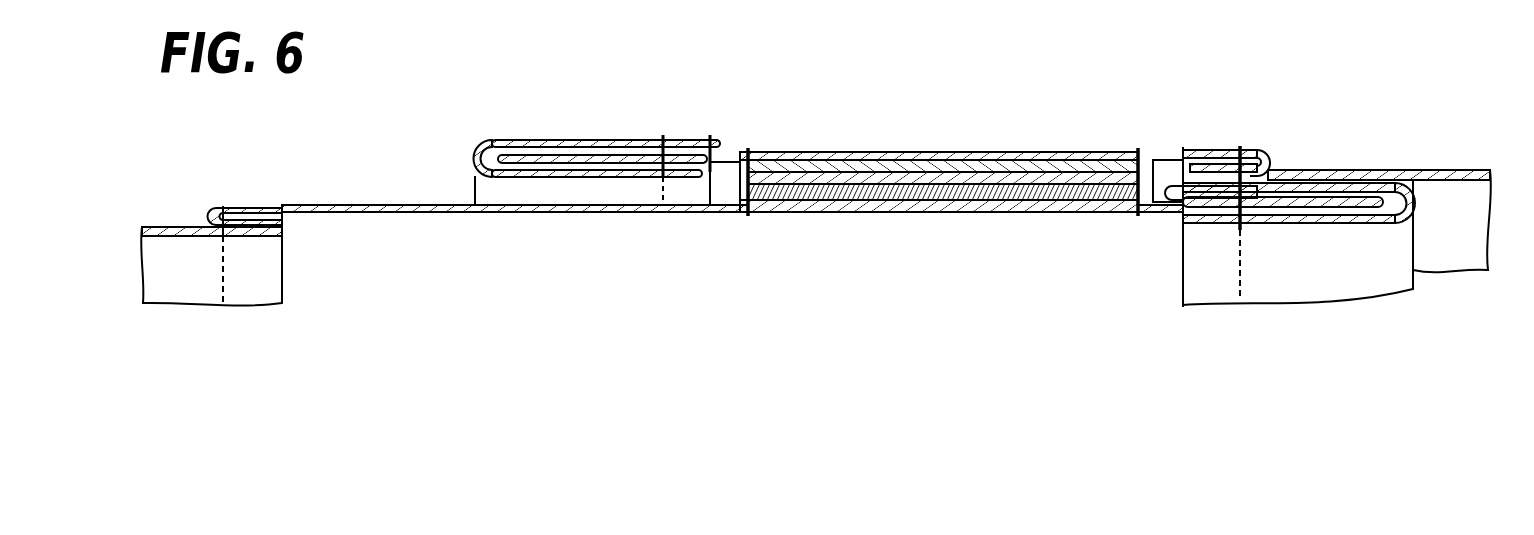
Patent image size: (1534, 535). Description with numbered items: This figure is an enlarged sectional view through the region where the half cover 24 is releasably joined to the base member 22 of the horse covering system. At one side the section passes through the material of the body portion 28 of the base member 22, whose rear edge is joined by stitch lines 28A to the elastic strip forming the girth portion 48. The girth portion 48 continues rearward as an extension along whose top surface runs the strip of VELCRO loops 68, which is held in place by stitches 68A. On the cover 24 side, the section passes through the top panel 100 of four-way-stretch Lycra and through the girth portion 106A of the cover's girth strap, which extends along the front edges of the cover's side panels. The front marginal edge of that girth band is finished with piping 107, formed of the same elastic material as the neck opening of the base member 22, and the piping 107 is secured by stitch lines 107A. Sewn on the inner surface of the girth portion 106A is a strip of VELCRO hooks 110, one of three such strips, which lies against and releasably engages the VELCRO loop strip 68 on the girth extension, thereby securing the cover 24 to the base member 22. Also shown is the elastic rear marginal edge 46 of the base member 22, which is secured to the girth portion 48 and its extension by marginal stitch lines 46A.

The base member 22 is at (380, 192).
The cover 24 is at (1278, 140).
The body portion 28 is at (170, 224).
The stitch lines 28A is at (268, 206).
The rear marginal edge 46 is at (1368, 223).
The marginal stitch lines 46A is at (1183, 224).
The girth portion 48 is at (445, 213).
The strip of VELCRO loops 68 is at (1074, 170).
The stitches 68A is at (756, 214).
The top panel 100 is at (1452, 170).
The girth portion 106A is at (840, 160).
The piping 107 is at (613, 140).
The stitch lines 107A is at (664, 139).
The strip of VELCRO hooks 110 is at (927, 170).